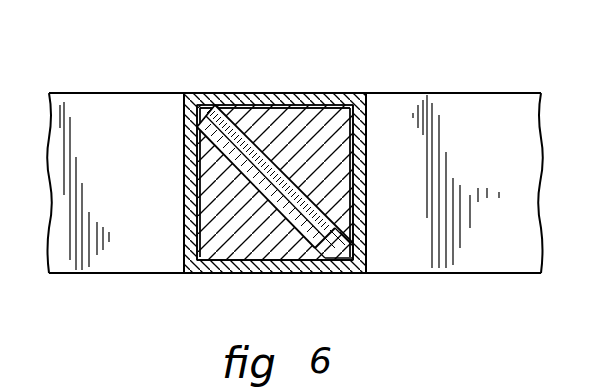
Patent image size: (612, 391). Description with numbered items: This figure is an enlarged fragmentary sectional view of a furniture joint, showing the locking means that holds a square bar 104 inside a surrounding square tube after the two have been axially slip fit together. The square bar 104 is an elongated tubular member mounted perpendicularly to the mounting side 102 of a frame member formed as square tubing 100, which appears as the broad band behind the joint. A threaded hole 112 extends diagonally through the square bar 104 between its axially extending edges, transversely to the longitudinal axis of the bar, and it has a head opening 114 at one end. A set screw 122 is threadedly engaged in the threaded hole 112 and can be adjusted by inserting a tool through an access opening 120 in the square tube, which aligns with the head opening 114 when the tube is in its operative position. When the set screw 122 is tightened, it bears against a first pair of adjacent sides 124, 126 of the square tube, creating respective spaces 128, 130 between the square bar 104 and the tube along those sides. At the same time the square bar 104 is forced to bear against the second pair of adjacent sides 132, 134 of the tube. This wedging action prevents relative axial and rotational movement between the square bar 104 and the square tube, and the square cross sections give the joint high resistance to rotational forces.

The square tubing 100 is at (483, 93).
The mounting side 102 is at (493, 235).
The square bar 104 is at (329, 117).
The threaded hole 112 is at (322, 258).
The head opening 114 is at (342, 258).
The access opening 120 is at (356, 264).
The set screw 122 is at (257, 195).
The first adjacent side 124 is at (197, 172).
The first adjacent side 126 is at (252, 108).
The space 128 is at (185, 188).
The space 130 is at (292, 104).
The second adjacent side 132 is at (240, 262).
The second adjacent side 134 is at (352, 172).